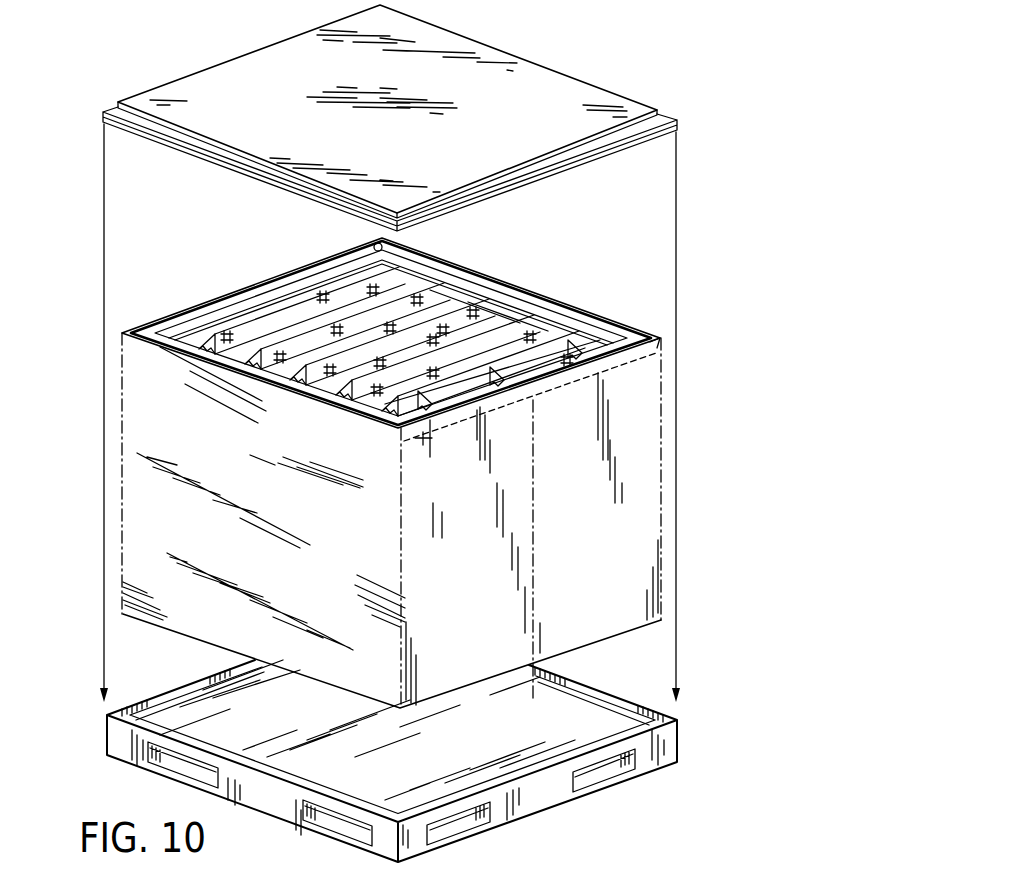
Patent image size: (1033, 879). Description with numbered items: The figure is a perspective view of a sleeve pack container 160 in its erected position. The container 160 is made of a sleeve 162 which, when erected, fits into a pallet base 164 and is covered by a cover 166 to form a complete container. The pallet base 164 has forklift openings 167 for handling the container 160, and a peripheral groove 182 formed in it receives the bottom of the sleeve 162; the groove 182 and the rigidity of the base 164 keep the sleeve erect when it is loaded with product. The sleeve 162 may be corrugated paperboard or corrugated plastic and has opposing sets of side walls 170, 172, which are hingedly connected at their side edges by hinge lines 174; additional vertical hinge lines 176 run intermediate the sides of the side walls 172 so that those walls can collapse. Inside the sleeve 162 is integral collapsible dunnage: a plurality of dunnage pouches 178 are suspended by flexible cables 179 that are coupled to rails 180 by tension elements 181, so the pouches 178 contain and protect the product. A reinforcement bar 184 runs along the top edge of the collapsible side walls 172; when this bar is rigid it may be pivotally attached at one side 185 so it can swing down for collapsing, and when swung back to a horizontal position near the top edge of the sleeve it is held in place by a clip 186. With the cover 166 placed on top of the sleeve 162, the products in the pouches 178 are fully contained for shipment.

The container 160 is at (722, 245).
The sleeve 162 is at (640, 515).
The pallet base 164 is at (690, 737).
The cover 166 is at (657, 89).
The forklift openings 167 is at (458, 826).
The side walls 170 is at (580, 321).
The side walls 172 is at (220, 292).
The hinge lines 174 is at (125, 414).
The vertical hinge lines 176 is at (533, 470).
The dunnage pouches 178 is at (507, 317).
The flexible cables 179 is at (438, 275).
The rails 180 is at (495, 273).
The tension elements 181 is at (543, 310).
The peripheral groove 182 is at (613, 708).
The reinforcement bar 184 is at (263, 282).
The side 185 is at (654, 350).
The clip 186 is at (366, 240).